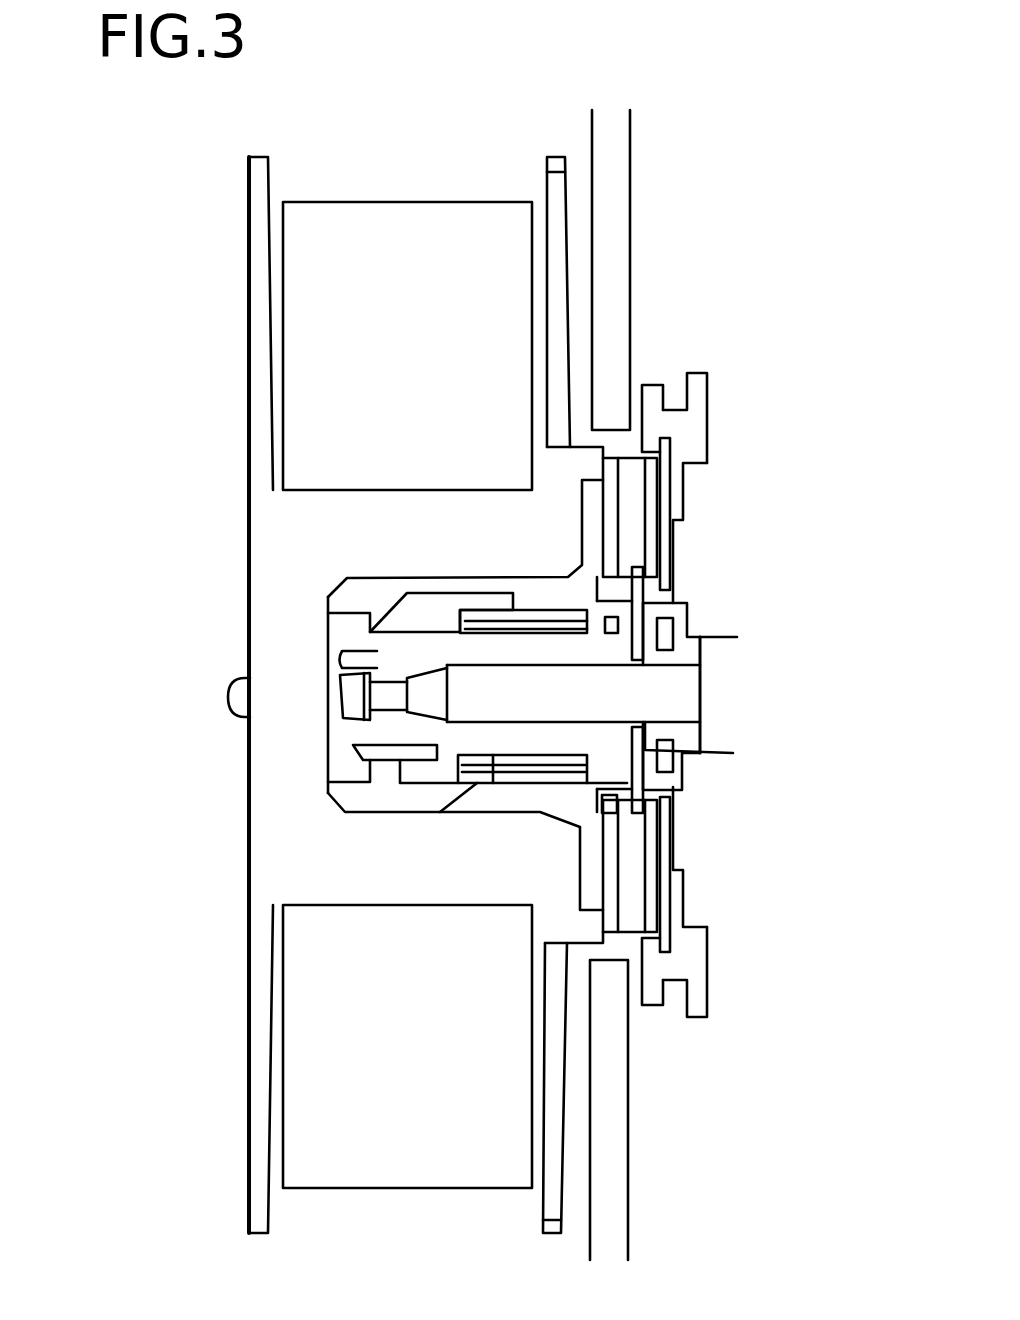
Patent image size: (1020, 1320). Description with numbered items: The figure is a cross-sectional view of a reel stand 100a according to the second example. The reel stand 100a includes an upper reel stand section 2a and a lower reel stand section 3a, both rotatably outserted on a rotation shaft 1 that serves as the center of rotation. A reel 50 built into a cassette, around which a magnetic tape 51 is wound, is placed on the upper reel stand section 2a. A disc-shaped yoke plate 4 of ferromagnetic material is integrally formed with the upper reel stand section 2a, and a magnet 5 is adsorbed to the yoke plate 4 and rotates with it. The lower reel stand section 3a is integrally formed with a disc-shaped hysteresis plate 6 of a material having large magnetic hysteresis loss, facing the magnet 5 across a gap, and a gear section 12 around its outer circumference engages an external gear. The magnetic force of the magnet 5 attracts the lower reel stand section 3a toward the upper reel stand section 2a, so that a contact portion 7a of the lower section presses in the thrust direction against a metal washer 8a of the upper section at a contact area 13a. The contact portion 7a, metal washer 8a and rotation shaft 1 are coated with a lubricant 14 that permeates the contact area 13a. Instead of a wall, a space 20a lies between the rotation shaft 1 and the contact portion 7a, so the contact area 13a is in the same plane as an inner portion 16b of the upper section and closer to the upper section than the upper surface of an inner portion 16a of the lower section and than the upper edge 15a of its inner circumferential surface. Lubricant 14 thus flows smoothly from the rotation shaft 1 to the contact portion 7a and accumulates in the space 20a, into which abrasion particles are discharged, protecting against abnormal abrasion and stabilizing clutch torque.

The reel stand 100a is at (801, 201).
The rotation shaft 1 is at (677, 697).
The upper reel stand section 2a is at (477, 741).
The lower reel stand section 3a is at (688, 428).
The yoke plate 4 is at (612, 500).
The magnet 5 is at (637, 888).
The hysteresis plate 6 is at (673, 553).
The contact portion 7a is at (683, 593).
The metal washer 8a is at (672, 787).
The gear section 12 is at (693, 376).
The contact area 13a is at (673, 573).
The lubricant 14 is at (523, 725).
The upper edge 15a is at (700, 670).
The portion of the lower reel stand section 16a is at (680, 615).
The portion of the upper reel stand section 16b is at (620, 610).
The space 20a is at (733, 753).
The reel 50 is at (280, 560).
The magnetic tape 51 is at (395, 347).